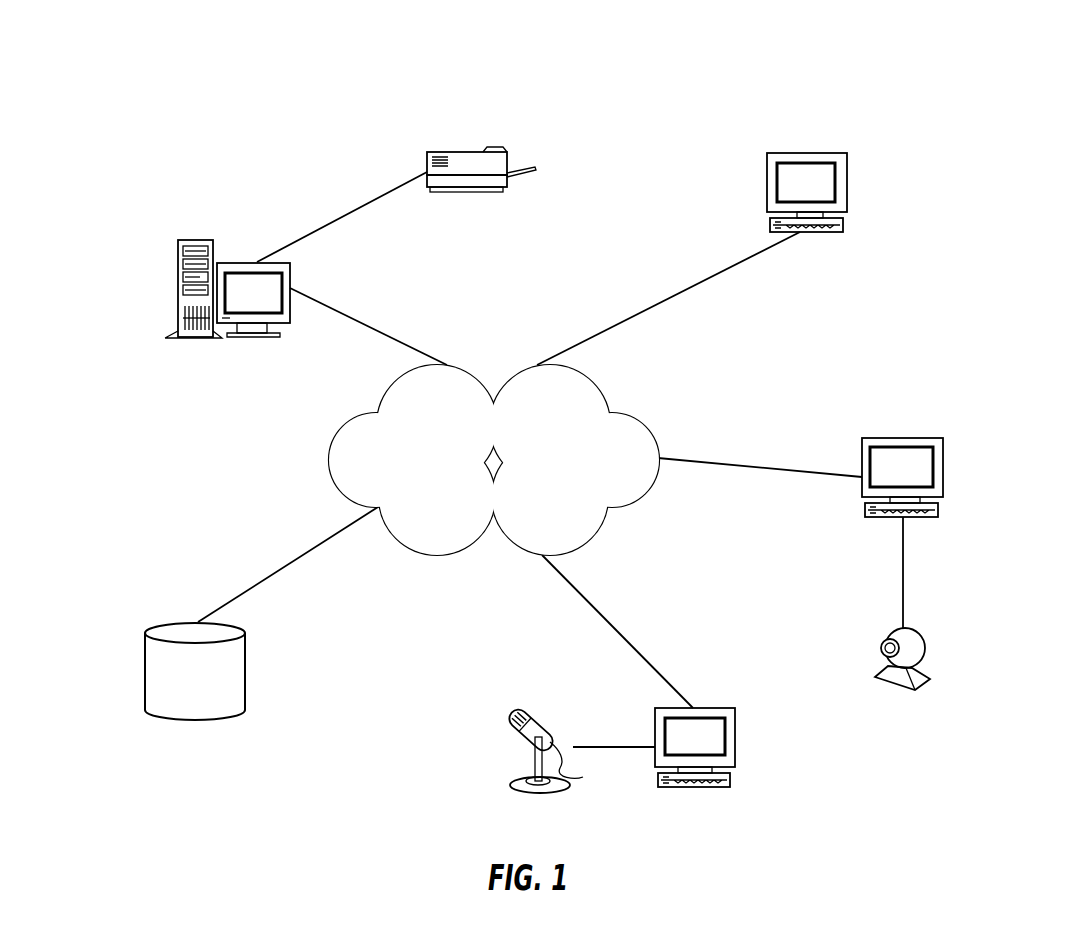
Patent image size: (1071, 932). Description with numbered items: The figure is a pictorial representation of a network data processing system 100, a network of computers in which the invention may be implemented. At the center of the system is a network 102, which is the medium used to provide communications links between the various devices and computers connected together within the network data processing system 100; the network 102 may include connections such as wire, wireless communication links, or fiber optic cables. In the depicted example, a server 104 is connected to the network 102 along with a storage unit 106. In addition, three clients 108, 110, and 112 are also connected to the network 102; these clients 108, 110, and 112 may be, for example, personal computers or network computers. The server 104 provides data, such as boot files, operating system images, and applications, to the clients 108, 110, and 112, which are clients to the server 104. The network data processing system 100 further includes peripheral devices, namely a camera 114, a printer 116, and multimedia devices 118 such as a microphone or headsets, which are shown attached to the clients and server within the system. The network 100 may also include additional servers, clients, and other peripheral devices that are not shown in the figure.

The network data processing system 100 is at (273, 62).
The network 102 is at (518, 472).
The server 104 is at (183, 240).
The storage unit 106 is at (218, 693).
The client 108 is at (779, 153).
The client 110 is at (880, 438).
The client 112 is at (713, 708).
The camera 114 is at (884, 648).
The printer 116 is at (441, 152).
The multimedia devices 118 is at (520, 780).